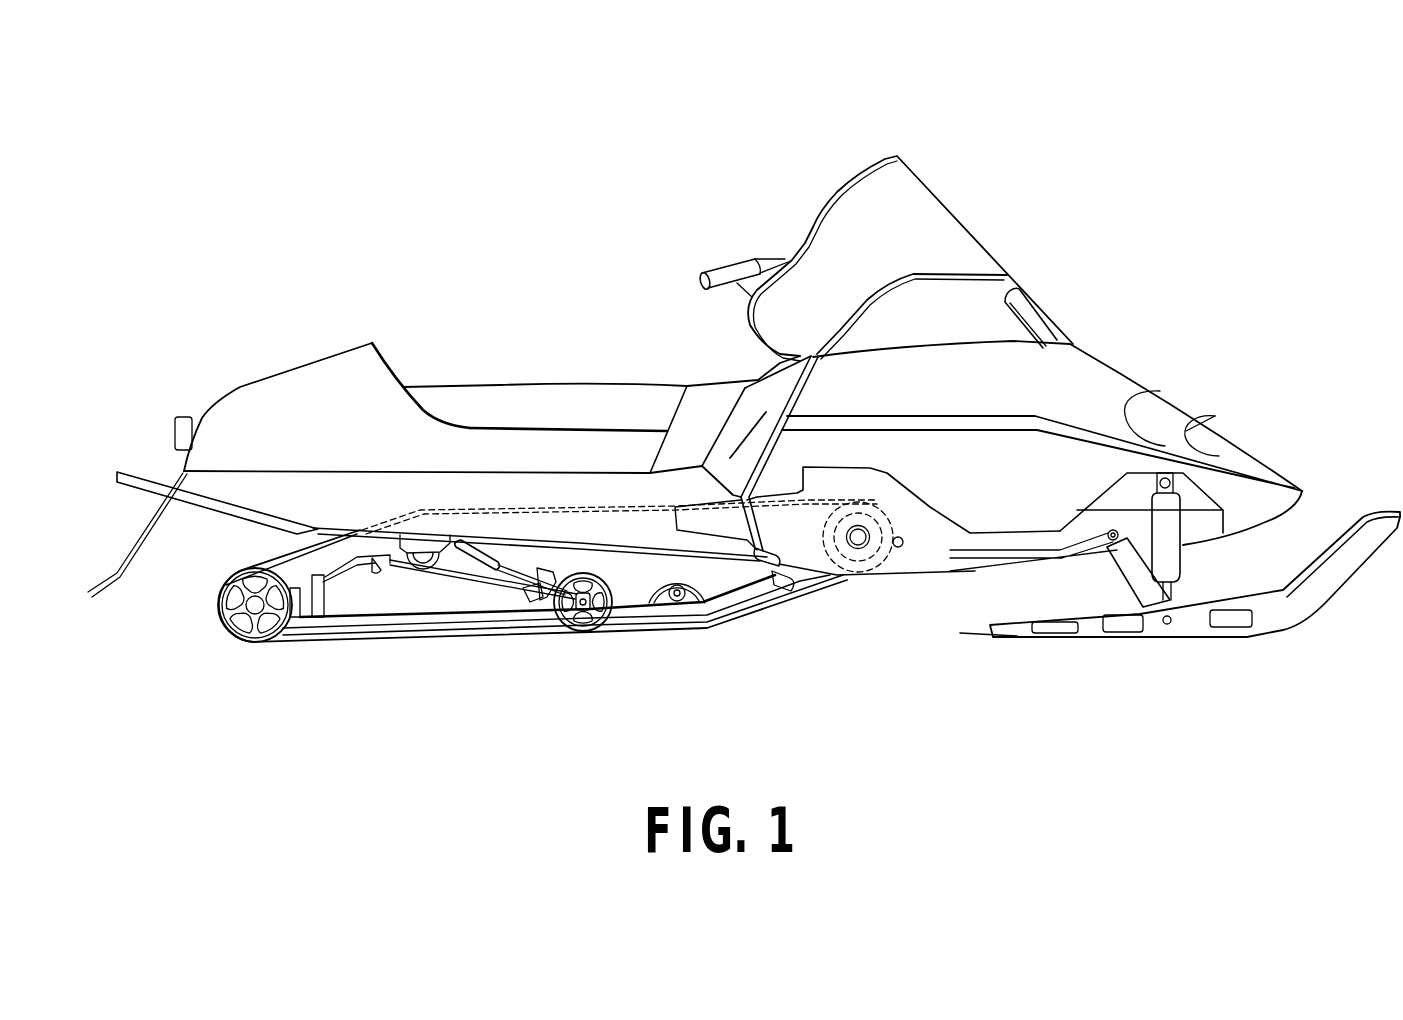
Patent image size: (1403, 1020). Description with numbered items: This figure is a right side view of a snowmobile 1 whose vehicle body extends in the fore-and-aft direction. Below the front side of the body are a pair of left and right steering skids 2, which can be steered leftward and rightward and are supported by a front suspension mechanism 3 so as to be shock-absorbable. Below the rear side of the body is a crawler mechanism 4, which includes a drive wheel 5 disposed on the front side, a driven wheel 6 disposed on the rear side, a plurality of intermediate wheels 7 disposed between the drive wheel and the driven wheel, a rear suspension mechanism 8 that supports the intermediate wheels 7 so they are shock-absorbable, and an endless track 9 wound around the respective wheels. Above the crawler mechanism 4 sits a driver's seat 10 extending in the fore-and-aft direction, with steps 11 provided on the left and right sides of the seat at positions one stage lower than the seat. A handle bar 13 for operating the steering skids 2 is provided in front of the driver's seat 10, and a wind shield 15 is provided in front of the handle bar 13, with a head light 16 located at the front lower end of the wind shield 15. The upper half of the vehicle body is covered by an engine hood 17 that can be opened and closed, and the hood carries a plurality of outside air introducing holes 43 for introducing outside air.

The snowmobile 1 is at (586, 152).
The steering skids 2 is at (1348, 621).
The front suspension mechanism 3 is at (1196, 563).
The crawler mechanism 4 is at (343, 700).
The drive wheel 5 is at (896, 617).
The driven wheel 6 is at (230, 670).
The intermediate wheels 7 is at (585, 669).
The rear suspension mechanism 8 is at (522, 665).
The endless track 9 is at (450, 669).
The driver's seat 10 is at (546, 395).
The steps 11 is at (445, 471).
The handle bar 13 is at (735, 263).
The wind shield 15 is at (962, 186).
The head light 16 is at (1060, 284).
The engine hood 17 is at (1126, 334).
The outside air introducing holes 43 is at (1233, 393).